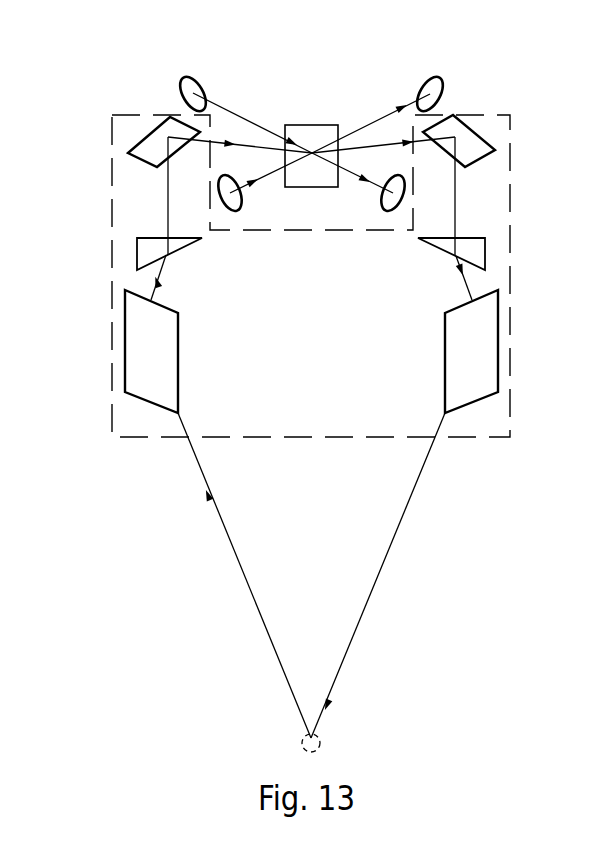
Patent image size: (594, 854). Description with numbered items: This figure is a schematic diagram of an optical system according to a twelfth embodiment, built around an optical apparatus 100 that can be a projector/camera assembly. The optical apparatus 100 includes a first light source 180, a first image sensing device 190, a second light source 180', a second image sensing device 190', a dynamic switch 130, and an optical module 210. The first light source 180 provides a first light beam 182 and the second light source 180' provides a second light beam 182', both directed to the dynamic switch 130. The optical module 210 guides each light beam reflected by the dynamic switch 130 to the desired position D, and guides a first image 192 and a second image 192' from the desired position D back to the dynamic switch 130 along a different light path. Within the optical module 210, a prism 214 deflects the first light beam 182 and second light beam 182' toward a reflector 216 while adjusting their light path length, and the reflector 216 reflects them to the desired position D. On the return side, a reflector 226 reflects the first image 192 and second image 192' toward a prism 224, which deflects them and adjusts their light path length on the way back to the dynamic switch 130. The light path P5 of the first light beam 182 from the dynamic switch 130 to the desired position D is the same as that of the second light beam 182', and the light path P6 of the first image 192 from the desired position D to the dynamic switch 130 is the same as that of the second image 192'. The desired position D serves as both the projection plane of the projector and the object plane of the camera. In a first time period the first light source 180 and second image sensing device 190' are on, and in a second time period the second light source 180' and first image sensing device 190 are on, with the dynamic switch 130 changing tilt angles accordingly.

The optical apparatus 100 is at (72, 63).
The dynamic switch 130 is at (307, 128).
The first light source 180 is at (196, 77).
The first image sensing device 190 is at (430, 77).
The second light source 180' is at (240, 216).
The second image sensing device 190' is at (382, 216).
The first light beam 182 is at (343, 409).
The first image 192 is at (277, 409).
The second light beam 182' is at (271, 191).
The second image 192' is at (352, 191).
The optical module 210 is at (510, 272).
The prism 214 is at (447, 245).
The prism 224 is at (177, 245).
The reflector 216 is at (458, 333).
The reflector 226 is at (165, 333).
The light path P5 is at (397, 540).
The light path P6 is at (226, 540).
The desired position D is at (320, 745).